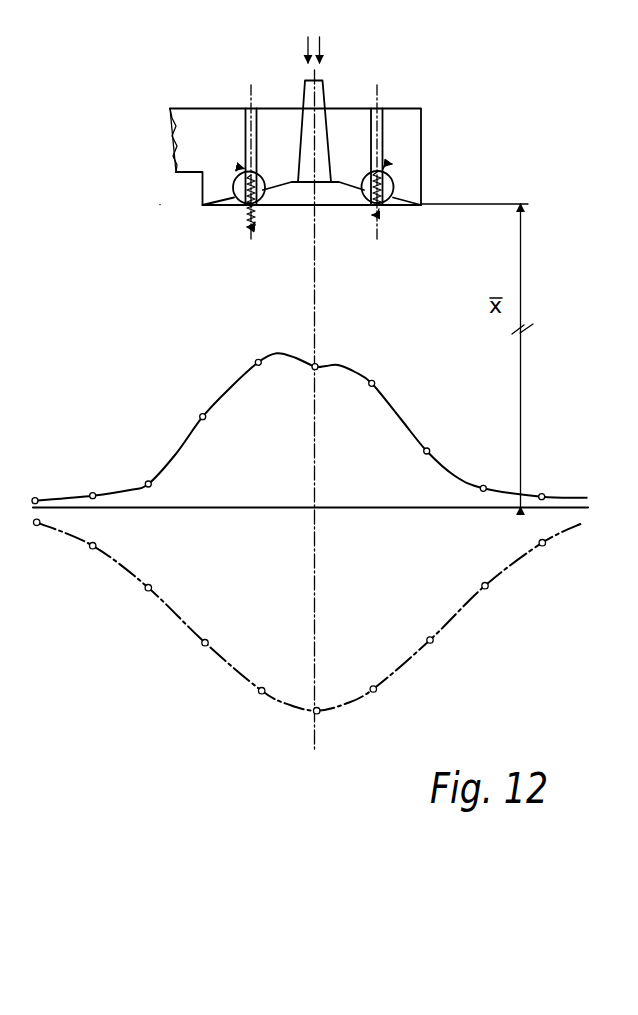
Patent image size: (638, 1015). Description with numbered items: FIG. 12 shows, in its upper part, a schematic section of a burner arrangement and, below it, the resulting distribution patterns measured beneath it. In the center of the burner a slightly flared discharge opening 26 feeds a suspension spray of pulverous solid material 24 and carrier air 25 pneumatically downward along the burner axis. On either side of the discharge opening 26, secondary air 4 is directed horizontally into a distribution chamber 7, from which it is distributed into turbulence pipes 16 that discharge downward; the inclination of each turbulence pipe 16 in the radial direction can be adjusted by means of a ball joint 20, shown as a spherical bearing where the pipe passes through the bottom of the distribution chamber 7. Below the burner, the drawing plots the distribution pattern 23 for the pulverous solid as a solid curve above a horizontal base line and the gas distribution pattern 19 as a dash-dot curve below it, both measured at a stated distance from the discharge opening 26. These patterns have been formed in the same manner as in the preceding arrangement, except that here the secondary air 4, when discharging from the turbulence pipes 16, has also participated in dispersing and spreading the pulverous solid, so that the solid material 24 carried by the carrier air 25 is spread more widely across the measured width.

The secondary gas 4 is at (163, 142).
The distribution chamber 7 is at (402, 142).
The turbulence pipes 16 is at (372, 185).
The gas distribution pattern 19 is at (440, 632).
The ball joint 20 is at (235, 187).
The distribution pattern for pulverous solid material 23 is at (408, 425).
The solid material 24 is at (290, 35).
The carrier air 25 is at (337, 35).
The discharge opening 26 is at (307, 167).